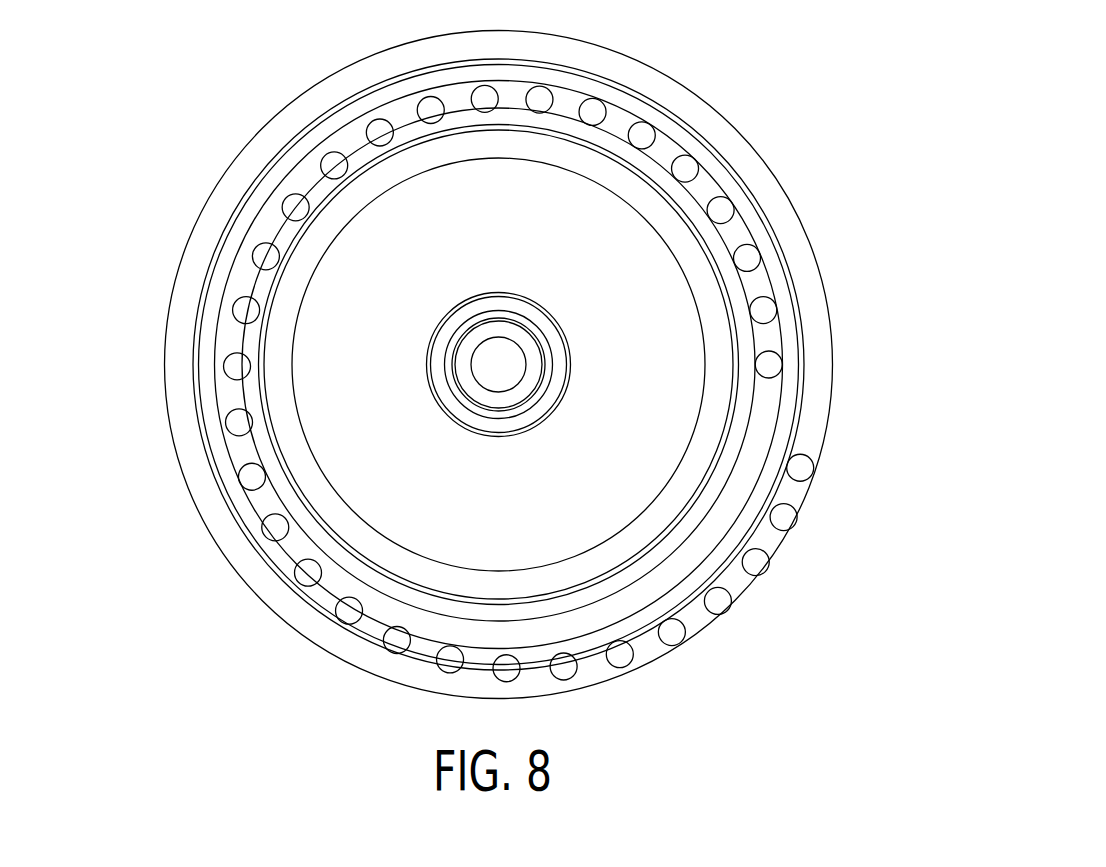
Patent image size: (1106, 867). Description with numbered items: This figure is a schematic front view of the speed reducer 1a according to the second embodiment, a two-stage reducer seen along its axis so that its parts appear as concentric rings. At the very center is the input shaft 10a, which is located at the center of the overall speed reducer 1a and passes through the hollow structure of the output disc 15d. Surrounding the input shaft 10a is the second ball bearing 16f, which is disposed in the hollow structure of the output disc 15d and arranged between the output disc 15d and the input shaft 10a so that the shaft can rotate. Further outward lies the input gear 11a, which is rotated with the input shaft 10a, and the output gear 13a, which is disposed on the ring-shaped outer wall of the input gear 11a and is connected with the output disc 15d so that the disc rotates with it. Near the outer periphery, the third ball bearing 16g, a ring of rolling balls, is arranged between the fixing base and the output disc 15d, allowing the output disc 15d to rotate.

The speed reducer 1a is at (1074, 82).
The input shaft 10a is at (492, 357).
The input gear 11a is at (637, 303).
The output gear 13a is at (707, 433).
The output disc 15d is at (753, 553).
The second ball bearing 16f is at (543, 328).
The third ball bearing 16g is at (762, 335).